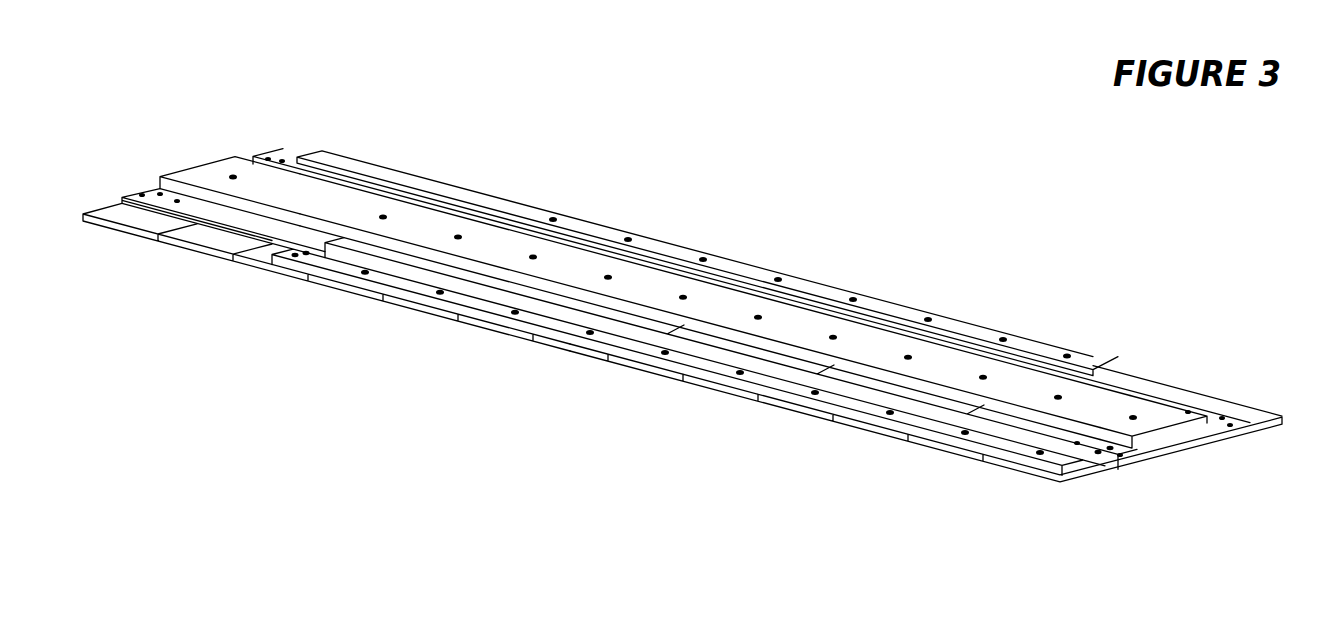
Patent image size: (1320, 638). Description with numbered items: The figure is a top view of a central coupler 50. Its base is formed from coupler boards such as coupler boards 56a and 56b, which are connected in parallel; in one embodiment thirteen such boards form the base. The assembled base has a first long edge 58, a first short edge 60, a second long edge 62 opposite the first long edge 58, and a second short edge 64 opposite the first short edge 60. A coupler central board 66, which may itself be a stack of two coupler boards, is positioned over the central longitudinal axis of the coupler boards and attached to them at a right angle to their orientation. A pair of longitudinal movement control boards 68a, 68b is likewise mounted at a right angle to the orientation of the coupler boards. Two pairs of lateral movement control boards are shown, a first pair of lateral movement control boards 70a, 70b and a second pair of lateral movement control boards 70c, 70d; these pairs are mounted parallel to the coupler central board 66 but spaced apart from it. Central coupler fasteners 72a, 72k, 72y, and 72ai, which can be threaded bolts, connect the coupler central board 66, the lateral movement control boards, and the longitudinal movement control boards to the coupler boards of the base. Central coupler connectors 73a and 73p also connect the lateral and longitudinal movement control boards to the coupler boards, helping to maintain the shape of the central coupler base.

The central coupler 50 is at (922, 150).
The coupler board 56a is at (1017, 471).
The coupler board 56b is at (118, 232).
The first long edge 58 is at (342, 297).
The first short edge 60 is at (1212, 445).
The second long edge 62 is at (553, 209).
The second short edge 64 is at (207, 160).
The coupler central board 66 is at (1175, 437).
The longitudinal movement control board 68a is at (545, 312).
The longitudinal movement control board 68b is at (740, 272).
The lateral movement control board 70a is at (1121, 456).
The lateral movement control board 70b is at (1230, 426).
The lateral movement control board 70c is at (160, 193).
The lateral movement control board 70d is at (276, 158).
The central coupler fastener 72a is at (177, 200).
The central coupler fastener 72ai is at (1188, 412).
The central coupler fastener 72k is at (1077, 443).
The central coupler fastener 72y is at (290, 165).
The central coupler connector 73a is at (142, 194).
The central coupler connector 73p is at (1222, 418).